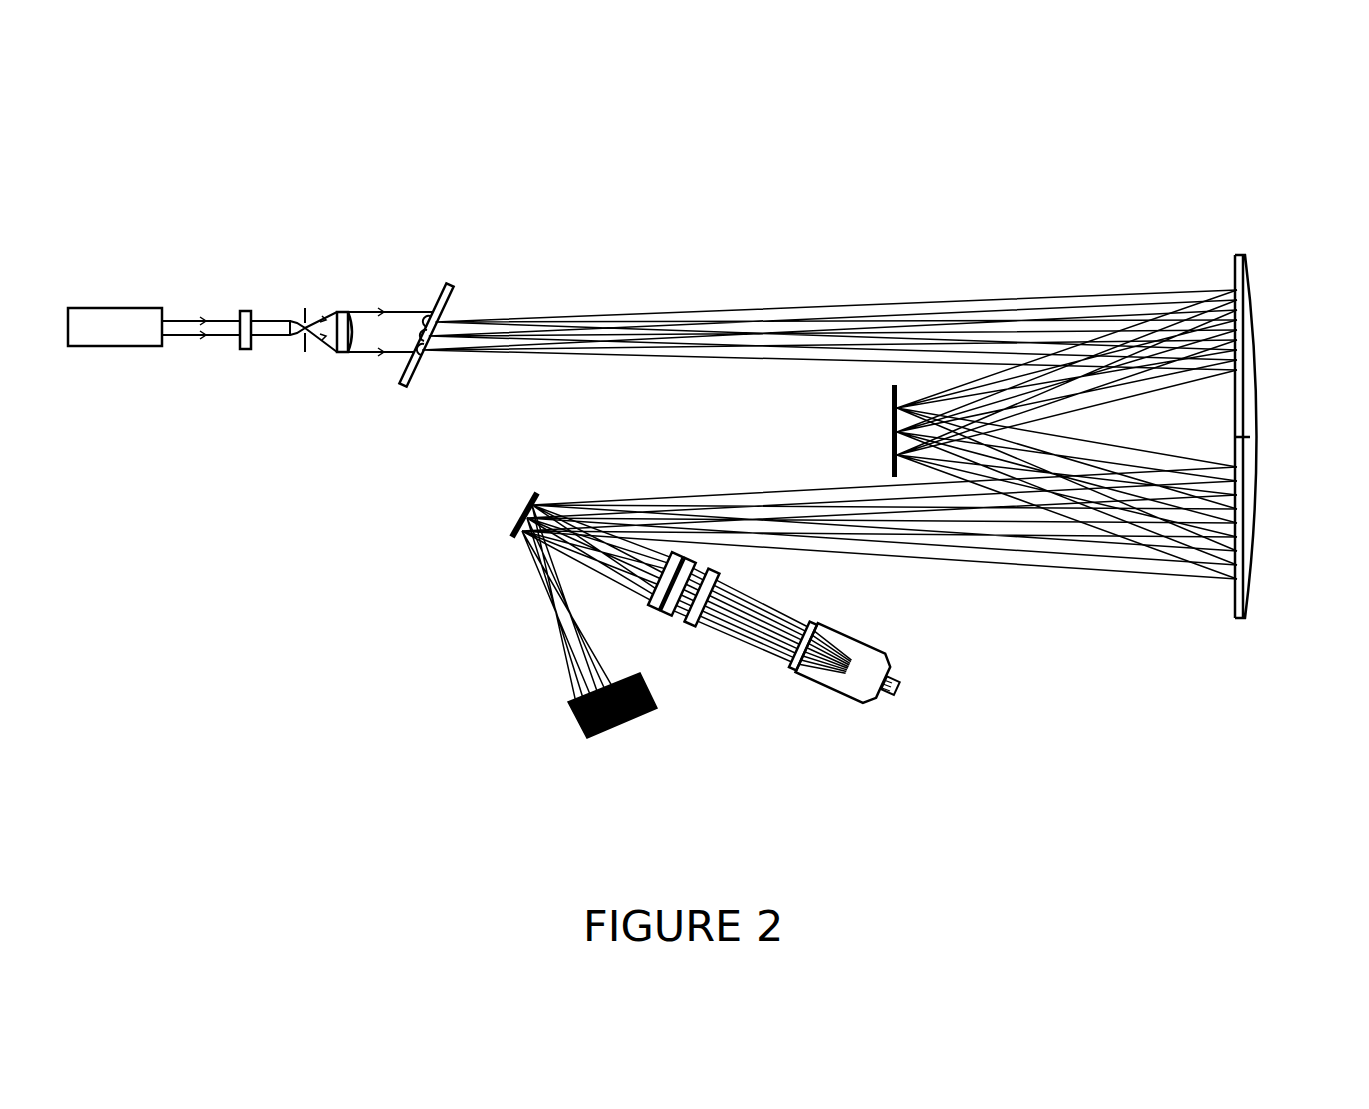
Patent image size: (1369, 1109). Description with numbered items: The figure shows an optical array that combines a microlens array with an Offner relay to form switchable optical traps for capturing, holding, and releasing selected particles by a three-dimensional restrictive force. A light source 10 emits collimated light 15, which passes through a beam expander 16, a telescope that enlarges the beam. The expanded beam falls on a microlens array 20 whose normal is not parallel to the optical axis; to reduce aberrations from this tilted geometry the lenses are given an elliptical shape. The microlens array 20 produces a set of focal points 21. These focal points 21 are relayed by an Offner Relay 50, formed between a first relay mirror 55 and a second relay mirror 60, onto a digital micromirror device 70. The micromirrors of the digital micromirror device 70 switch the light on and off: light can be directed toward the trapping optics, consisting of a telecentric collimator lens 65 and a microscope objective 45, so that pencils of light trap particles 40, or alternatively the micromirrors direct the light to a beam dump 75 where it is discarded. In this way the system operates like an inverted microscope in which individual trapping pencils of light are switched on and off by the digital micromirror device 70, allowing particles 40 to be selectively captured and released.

The light source 10 is at (154, 349).
The collimated light 15 is at (223, 346).
The beam expander 16 is at (342, 278).
The microlens array 20 is at (418, 352).
The focal points 21 is at (522, 350).
The trapping particles 40 is at (918, 687).
The microscope objective 45 is at (839, 695).
The Offner Relay 50 is at (1067, 381).
The lens M1 55 is at (1298, 436).
The lens M2 60 is at (852, 431).
The telecentric collimator lens 65 is at (726, 562).
The DMD 70 is at (846, 523).
The beam dump 75 is at (589, 635).